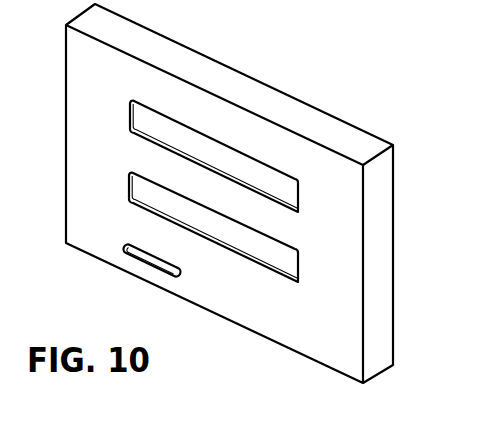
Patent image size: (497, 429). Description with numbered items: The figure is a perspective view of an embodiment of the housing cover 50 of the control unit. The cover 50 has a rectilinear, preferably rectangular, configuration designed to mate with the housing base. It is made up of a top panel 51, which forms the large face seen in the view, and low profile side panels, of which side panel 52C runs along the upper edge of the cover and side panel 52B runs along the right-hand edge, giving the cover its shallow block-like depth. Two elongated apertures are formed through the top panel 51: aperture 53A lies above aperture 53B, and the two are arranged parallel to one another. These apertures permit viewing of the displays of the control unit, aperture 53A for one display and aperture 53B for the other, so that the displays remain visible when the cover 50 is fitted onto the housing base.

The housing cover 50 is at (268, 193).
The top panel 51 is at (105, 230).
The side panel 52C is at (233, 83).
The side panel 52B is at (383, 273).
The aperture 53A is at (298, 199).
The aperture 53B is at (298, 267).